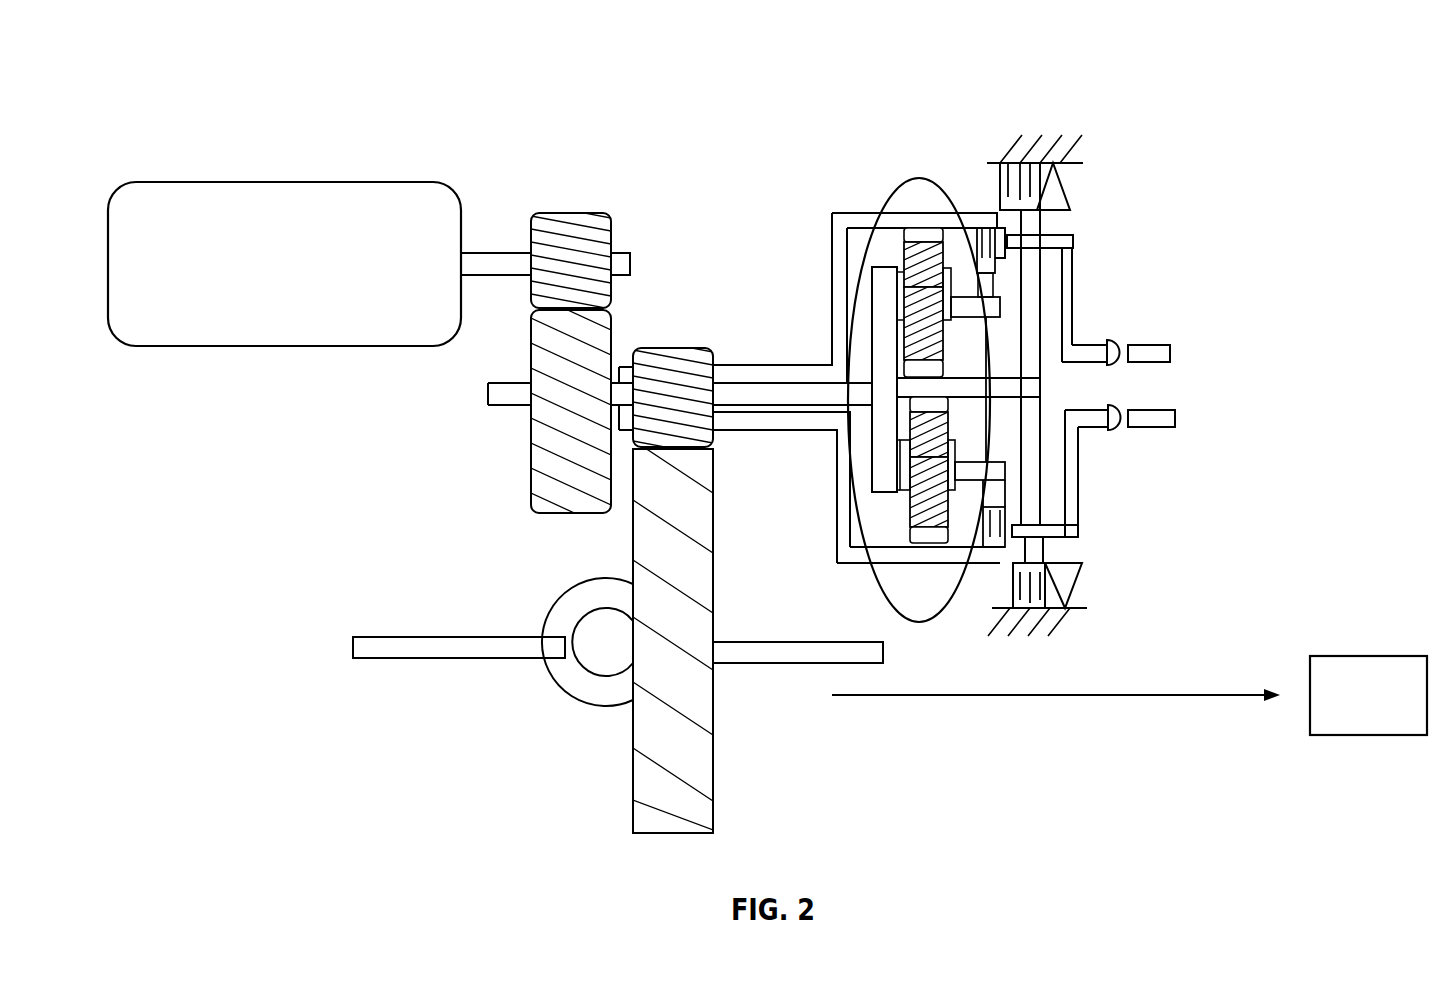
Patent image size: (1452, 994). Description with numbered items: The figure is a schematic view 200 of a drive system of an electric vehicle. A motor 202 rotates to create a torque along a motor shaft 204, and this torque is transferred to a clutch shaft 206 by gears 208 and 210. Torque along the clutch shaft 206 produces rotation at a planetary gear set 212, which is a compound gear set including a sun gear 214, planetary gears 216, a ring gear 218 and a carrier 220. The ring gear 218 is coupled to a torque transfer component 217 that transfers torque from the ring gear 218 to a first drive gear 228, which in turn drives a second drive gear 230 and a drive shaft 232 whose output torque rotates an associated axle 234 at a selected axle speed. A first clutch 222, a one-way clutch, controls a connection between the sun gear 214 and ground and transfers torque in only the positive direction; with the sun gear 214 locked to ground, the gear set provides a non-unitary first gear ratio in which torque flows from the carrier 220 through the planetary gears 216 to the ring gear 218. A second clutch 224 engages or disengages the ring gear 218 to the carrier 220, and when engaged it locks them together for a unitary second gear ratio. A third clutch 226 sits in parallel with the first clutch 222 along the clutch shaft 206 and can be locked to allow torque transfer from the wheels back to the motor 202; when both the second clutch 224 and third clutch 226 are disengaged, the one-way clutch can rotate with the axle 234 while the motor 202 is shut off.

The schematic view 200 is at (1342, 58).
The motor 202 is at (282, 182).
The motor shaft 204 is at (505, 253).
The clutch shaft 206 is at (768, 392).
The gear 208 is at (575, 218).
The gear 210 is at (540, 452).
The planetary gear set 212 is at (878, 597).
The sun gear 214 is at (938, 370).
The planetary gears 216 is at (922, 512).
The torque transfer component 217 is at (757, 430).
The ring gear 218 is at (910, 232).
The carrier 220 is at (876, 290).
The first clutch 222 is at (1067, 186).
The second clutch 224 is at (967, 235).
The third clutch 226 is at (997, 163).
The first drive gear 228 is at (680, 362).
The second drive gear 230 is at (673, 810).
The drive shaft 232 is at (463, 645).
The associated axle 234 is at (1345, 711).